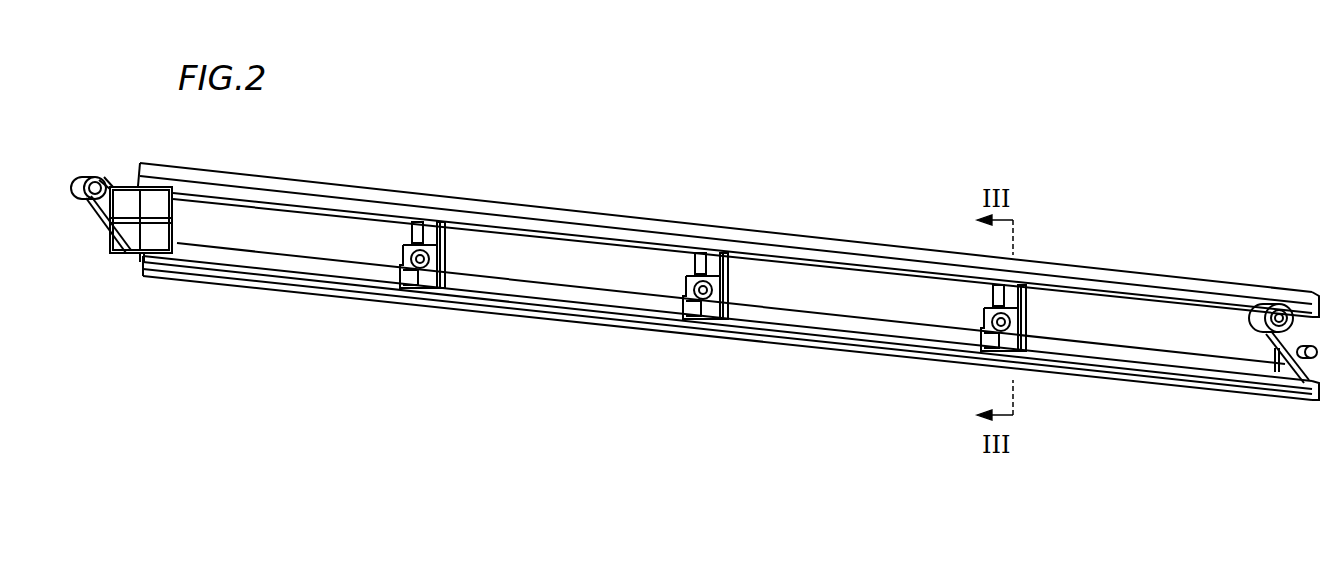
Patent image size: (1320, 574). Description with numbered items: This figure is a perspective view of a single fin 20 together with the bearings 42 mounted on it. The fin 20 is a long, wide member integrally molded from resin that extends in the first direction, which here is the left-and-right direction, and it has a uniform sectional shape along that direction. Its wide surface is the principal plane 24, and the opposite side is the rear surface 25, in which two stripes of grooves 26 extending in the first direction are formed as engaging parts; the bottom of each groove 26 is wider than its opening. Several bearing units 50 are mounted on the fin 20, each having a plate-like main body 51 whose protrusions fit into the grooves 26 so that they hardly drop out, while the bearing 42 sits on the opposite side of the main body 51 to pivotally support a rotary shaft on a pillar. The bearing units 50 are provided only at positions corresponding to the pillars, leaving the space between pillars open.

The fin 20 is at (1186, 338).
The principal plane 24 is at (885, 302).
The rear surface 25 is at (525, 255).
The groove 26 is at (582, 240).
The bearing 42 is at (693, 273).
The bearing unit 50 is at (740, 297).
The main body 51 is at (710, 257).